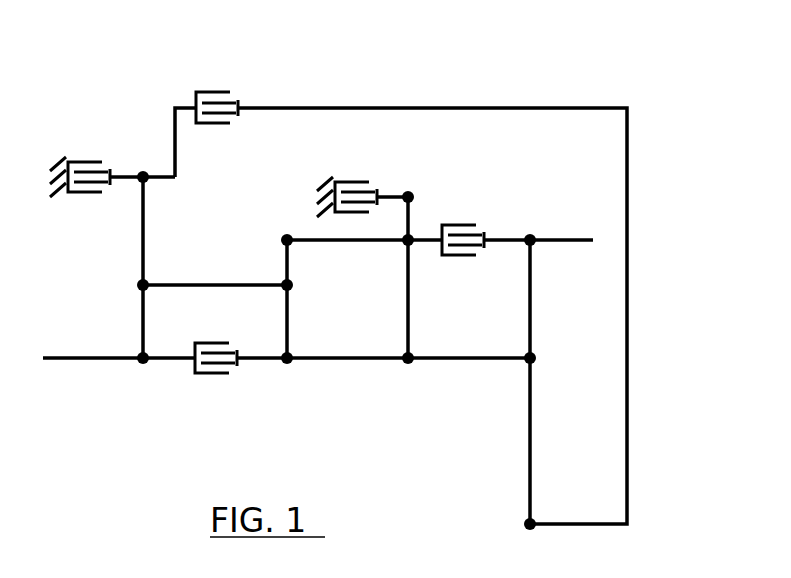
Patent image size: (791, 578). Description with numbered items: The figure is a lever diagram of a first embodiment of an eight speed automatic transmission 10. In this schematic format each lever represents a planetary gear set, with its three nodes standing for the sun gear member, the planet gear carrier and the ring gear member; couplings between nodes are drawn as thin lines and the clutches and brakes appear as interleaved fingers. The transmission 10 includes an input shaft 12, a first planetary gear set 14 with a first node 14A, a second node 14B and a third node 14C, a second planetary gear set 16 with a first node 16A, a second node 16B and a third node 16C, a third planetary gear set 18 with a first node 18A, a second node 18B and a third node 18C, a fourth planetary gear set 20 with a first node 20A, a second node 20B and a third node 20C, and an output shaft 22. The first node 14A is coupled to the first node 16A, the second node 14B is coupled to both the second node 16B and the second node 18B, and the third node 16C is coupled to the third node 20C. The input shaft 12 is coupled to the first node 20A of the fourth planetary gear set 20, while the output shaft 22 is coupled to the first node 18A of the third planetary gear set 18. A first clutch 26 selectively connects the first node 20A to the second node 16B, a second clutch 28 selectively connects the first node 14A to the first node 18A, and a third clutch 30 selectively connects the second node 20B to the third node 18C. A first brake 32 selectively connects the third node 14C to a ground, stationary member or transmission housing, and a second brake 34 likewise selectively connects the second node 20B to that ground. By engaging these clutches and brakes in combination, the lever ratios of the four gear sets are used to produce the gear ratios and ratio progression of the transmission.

The eight speed automatic transmission 10 is at (590, 60).
The input shaft 12 is at (100, 360).
The first planetary gear set 14 is at (416, 382).
The first node of the first planetary gear set 14A is at (410, 243).
The second node of the first planetary gear set 14B is at (410, 355).
The third node of the first planetary gear set 14C is at (410, 194).
The second planetary gear set 16 is at (294, 380).
The first node of the second planetary gear set 16A is at (284, 237).
The second node of the second planetary gear set 16B is at (291, 354).
The third node of the second planetary gear set 16C is at (284, 282).
The third planetary gear set 18 is at (501, 438).
The first node of the third planetary gear set 18A is at (532, 237).
The second node of the third planetary gear set 18B is at (532, 358).
The third node of the third planetary gear set 18C is at (532, 522).
The fourth planetary gear set 20 is at (150, 395).
The first node of the fourth planetary gear set 20A is at (141, 352).
The second node of the fourth planetary gear set 20B is at (143, 172).
The third node of the fourth planetary gear set 20C is at (140, 283).
The output shaft 22 is at (590, 243).
The first clutch 26 is at (210, 342).
The second clutch 28 is at (460, 225).
The third clutch 30 is at (212, 90).
The first brake 32 is at (355, 182).
The second brake 34 is at (80, 162).